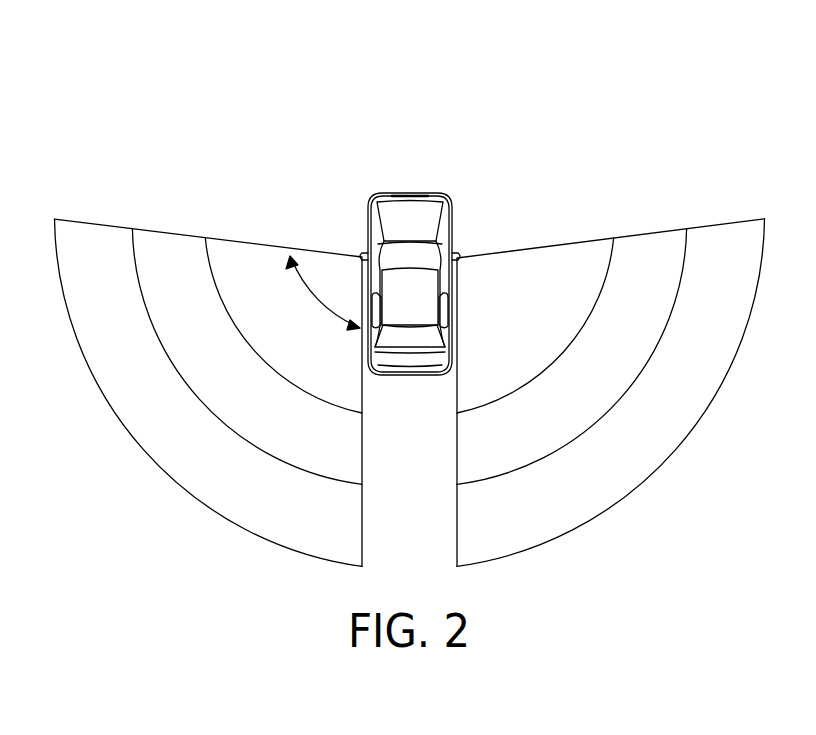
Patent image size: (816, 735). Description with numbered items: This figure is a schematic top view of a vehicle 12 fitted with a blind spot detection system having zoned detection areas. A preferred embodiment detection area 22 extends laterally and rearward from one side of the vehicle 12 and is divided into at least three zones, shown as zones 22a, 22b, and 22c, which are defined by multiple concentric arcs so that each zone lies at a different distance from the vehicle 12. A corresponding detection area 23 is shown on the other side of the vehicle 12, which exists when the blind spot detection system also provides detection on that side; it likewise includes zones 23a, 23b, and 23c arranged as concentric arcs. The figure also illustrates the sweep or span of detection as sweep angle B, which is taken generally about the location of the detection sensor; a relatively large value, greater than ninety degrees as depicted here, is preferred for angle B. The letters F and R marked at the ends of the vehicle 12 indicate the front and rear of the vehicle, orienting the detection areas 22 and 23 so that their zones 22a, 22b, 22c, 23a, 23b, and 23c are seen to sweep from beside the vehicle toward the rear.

The vehicle 12 is at (411, 224).
The detection area 22 is at (206, 358).
The zone 22a is at (237, 230).
The zone 22b is at (170, 253).
The zone 22c is at (92, 236).
The detection area 23 is at (611, 358).
The zone 23a is at (568, 263).
The zone 23b is at (640, 250).
The zone 23c is at (715, 237).
The sweep angle B is at (284, 247).
The front of vehicle F is at (433, 195).
The rear of vehicle R is at (435, 373).